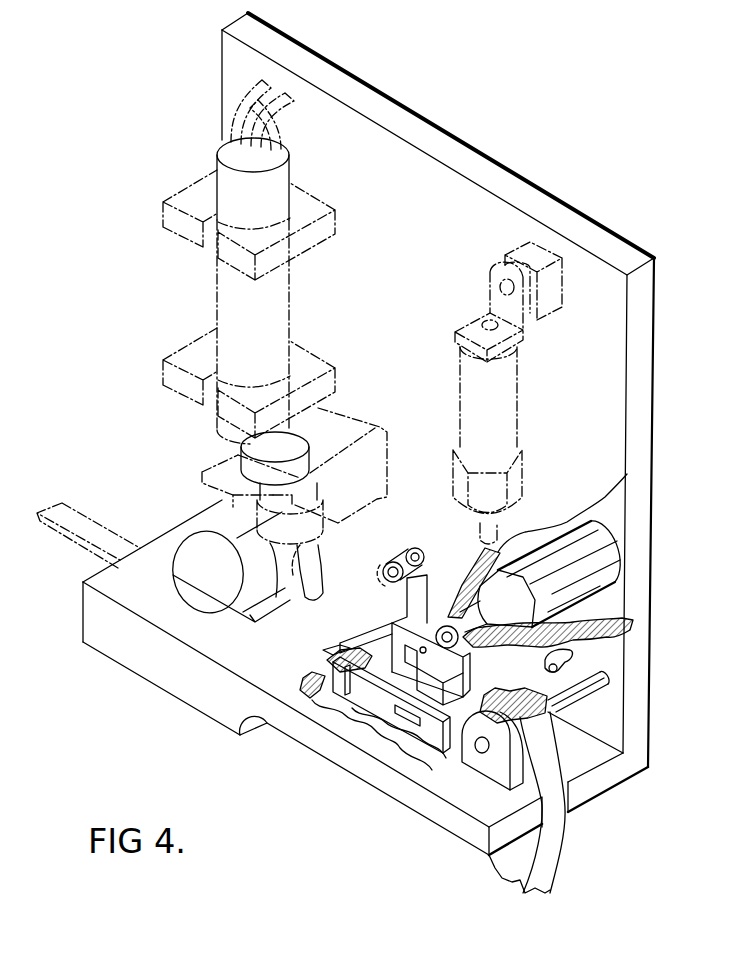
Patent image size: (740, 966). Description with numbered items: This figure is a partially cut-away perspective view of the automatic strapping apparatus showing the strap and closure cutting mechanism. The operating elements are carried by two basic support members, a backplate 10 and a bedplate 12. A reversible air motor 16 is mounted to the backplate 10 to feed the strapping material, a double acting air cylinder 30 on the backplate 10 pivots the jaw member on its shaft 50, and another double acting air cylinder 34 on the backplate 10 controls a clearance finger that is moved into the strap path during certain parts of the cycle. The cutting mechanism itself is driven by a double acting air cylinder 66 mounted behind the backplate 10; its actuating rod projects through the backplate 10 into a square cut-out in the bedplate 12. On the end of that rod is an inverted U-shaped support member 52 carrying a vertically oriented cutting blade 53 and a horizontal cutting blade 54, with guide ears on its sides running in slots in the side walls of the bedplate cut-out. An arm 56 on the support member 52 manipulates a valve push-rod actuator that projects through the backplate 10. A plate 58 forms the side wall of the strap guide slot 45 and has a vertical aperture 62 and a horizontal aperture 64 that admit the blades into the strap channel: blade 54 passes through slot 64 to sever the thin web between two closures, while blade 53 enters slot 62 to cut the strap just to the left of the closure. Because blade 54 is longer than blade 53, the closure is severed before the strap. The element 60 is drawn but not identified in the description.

The backplate 10 is at (637, 708).
The bedplate 12 is at (597, 783).
The reversible air motor 16 is at (272, 305).
The double acting air cylinder 30 is at (505, 413).
The double acting air cylinder 34 is at (276, 518).
The strap guide slot 45 is at (312, 714).
The shaft 50 is at (590, 692).
The inverted U-shaped support member 52 is at (410, 630).
The vertically oriented cutting blade 53 is at (321, 660).
The horizontal cutting blade 54 is at (430, 693).
The arm 56 is at (422, 603).
The plate 58 is at (380, 710).
The clip 60 is at (567, 660).
The vertical aperture 62 is at (320, 683).
The horizontal aperture 64 is at (405, 740).
The double acting air cylinder 66 is at (603, 573).